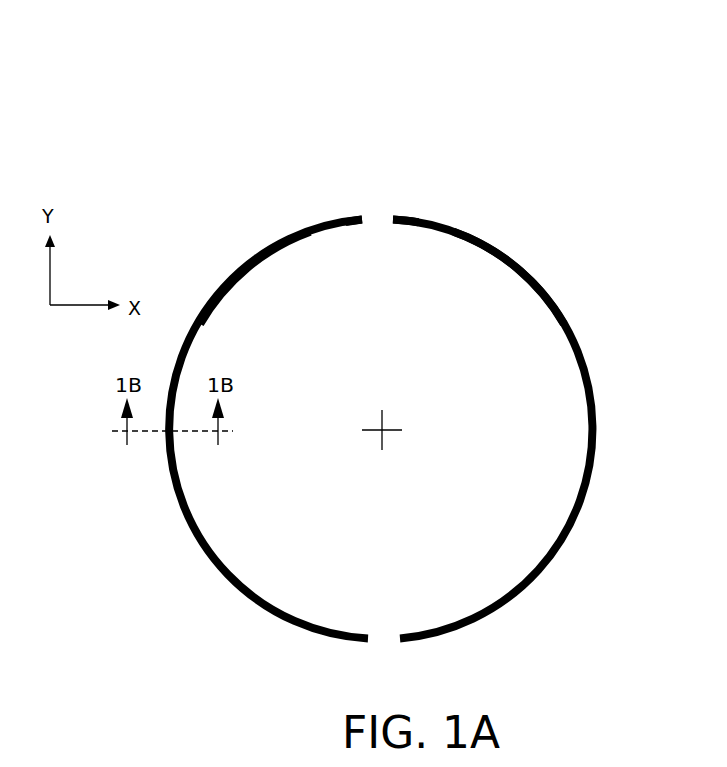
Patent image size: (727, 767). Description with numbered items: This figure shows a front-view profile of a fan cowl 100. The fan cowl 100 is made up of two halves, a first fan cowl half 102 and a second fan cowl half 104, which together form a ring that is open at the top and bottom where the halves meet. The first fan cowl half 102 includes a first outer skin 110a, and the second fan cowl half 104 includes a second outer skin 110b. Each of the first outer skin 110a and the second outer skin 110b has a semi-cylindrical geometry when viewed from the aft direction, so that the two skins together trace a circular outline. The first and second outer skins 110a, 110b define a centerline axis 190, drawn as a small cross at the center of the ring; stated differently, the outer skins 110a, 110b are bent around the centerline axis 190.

The fan cowl 100 is at (272, 108).
The first fan cowl half 102 is at (305, 210).
The second fan cowl half 104 is at (442, 204).
The first outer skin 110a is at (258, 250).
The second outer skin 110b is at (505, 248).
The centerline axis 190 is at (385, 433).